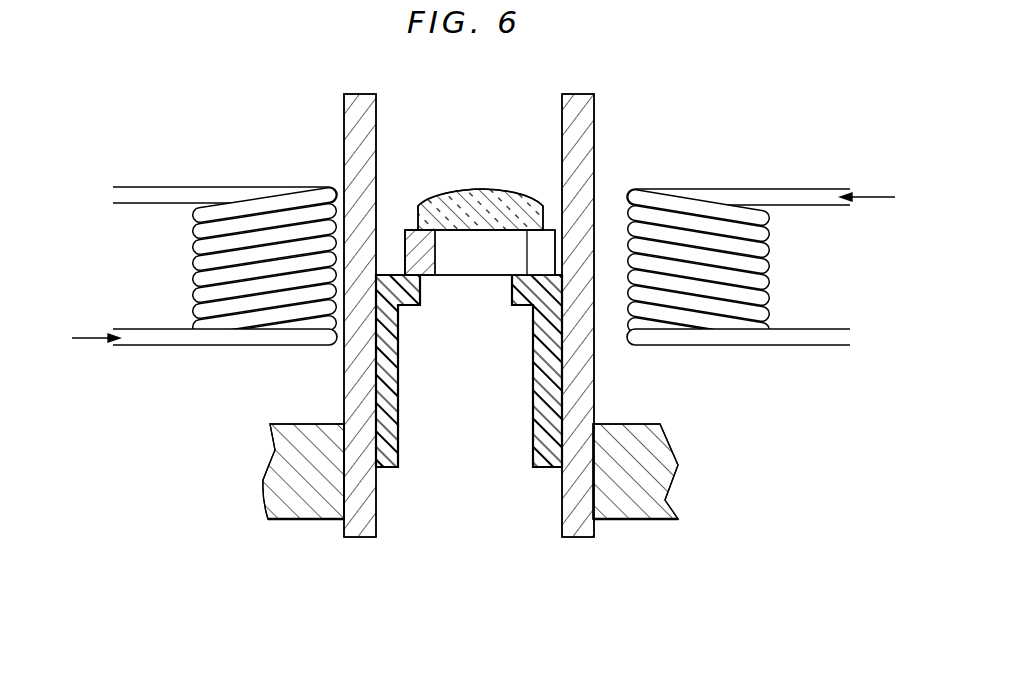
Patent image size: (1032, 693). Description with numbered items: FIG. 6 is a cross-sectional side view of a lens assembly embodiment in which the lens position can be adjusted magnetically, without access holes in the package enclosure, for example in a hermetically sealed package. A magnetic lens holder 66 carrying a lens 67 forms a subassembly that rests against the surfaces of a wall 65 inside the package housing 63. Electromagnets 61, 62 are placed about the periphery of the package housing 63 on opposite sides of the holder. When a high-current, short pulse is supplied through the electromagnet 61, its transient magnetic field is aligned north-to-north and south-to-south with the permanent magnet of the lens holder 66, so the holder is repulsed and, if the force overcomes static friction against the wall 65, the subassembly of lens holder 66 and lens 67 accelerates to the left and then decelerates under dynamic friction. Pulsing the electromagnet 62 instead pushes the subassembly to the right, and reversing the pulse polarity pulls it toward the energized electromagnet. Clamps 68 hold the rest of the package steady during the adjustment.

The electromagnet 61 is at (707, 188).
The electromagnet 62 is at (258, 187).
The package housing 63 is at (596, 115).
The wall 65 is at (533, 400).
The magnetic lens holder 66 is at (405, 228).
The lens 67 is at (477, 190).
The clamps 68 is at (280, 519).